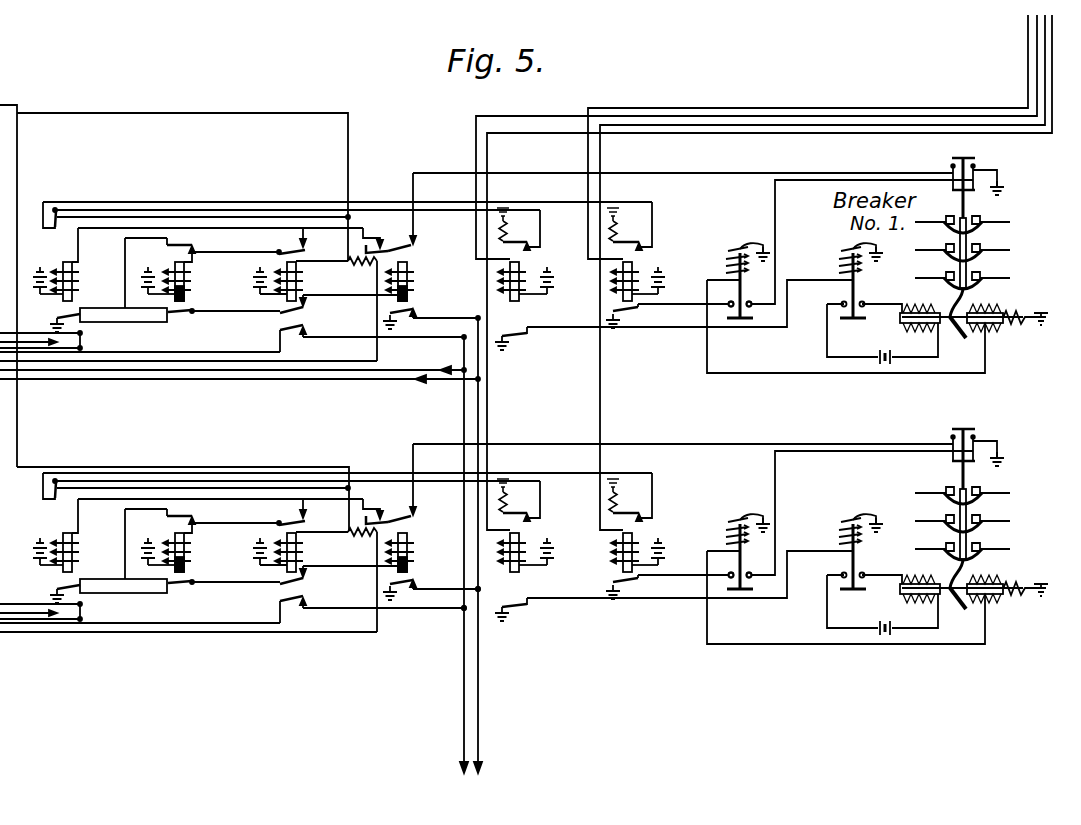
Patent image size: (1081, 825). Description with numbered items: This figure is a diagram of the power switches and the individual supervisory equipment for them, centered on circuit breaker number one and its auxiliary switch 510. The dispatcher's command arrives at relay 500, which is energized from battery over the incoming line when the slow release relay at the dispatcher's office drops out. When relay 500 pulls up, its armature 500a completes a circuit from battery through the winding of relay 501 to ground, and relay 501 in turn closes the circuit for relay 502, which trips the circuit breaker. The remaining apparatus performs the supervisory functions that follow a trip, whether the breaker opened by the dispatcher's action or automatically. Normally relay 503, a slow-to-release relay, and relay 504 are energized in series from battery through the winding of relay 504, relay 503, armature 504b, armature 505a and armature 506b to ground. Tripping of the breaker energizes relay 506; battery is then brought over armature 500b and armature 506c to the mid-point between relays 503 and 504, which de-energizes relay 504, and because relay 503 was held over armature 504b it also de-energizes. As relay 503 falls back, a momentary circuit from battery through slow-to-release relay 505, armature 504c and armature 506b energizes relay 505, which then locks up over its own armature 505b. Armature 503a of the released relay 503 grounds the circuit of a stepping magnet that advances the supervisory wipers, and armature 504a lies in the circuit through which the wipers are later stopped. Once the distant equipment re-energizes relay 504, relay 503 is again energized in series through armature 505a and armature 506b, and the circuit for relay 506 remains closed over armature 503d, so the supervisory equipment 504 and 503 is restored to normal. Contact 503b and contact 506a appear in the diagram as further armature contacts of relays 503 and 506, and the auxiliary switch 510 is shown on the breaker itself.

The relay 500 is at (622, 289).
The armature 500a is at (635, 314).
The armature 500b is at (638, 242).
The relay 501 is at (732, 266).
The relay 502 is at (993, 328).
The slow-to-release relay 503 is at (408, 280).
The armature 503a is at (416, 302).
The relay contact 503b is at (414, 246).
The armature 503d is at (379, 239).
The relay 504 is at (296, 280).
The armature 504a is at (294, 338).
The armature 504b is at (305, 314).
The armature 504c is at (305, 252).
The slow-to-release relay 505 is at (185, 281).
The armature 505a is at (180, 314).
The armature 505b is at (186, 247).
The relay 506 is at (80, 281).
The relay contact 506a is at (80, 342).
The armature 506b is at (76, 313).
The armature 506c is at (58, 229).
The auxiliary switch of breaker 510 is at (995, 170).